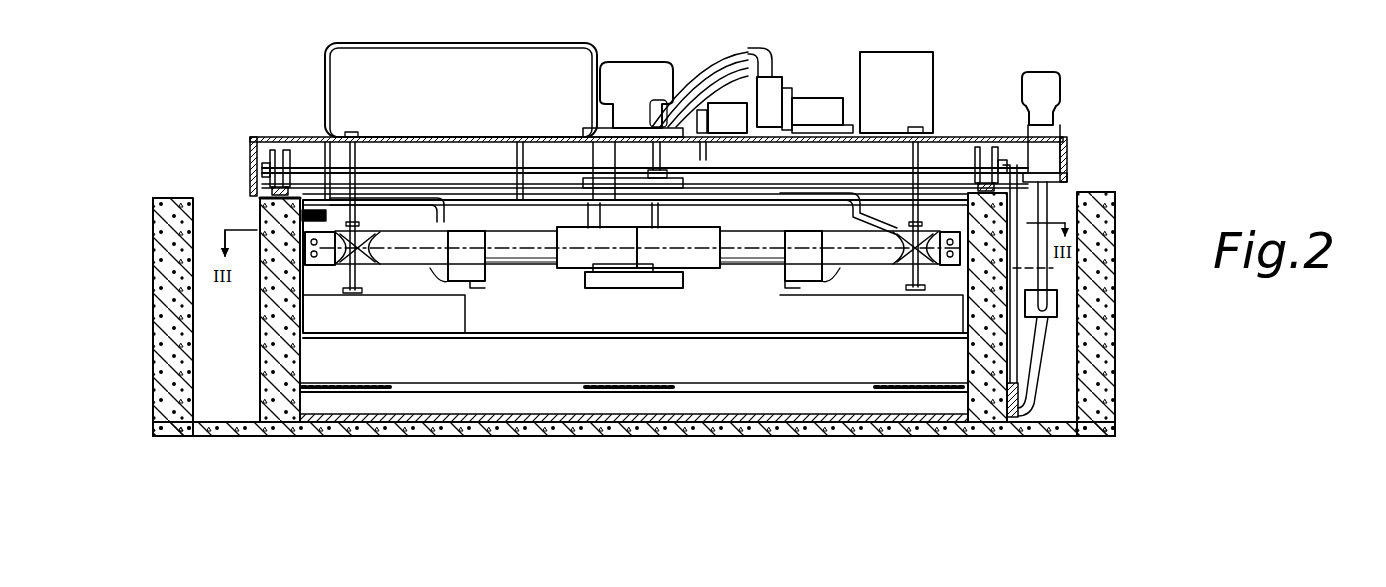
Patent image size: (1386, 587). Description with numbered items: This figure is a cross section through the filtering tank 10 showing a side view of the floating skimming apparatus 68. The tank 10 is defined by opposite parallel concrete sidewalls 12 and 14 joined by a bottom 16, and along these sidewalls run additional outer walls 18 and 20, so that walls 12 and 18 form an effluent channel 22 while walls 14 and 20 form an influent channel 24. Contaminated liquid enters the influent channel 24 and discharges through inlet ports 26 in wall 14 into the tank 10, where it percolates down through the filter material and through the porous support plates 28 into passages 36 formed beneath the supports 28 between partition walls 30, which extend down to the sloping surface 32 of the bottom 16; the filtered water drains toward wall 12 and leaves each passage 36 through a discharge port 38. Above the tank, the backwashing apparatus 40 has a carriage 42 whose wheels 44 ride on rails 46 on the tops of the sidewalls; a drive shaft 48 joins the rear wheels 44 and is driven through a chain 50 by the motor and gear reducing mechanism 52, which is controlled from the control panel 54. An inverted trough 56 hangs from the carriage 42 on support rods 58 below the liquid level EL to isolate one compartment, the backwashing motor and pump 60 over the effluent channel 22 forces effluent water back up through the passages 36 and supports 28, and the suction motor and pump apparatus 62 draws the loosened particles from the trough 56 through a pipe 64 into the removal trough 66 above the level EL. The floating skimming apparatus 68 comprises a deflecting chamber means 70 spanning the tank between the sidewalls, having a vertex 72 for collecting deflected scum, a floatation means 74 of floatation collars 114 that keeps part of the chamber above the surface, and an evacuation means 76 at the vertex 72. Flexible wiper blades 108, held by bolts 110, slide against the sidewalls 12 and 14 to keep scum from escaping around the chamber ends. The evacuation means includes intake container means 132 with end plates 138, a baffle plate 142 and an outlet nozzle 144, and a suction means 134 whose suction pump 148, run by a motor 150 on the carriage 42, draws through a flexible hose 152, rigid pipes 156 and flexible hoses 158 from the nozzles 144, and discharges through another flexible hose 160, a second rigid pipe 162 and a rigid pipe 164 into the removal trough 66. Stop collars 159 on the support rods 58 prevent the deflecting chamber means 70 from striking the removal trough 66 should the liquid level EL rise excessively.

The filtering tank 10 is at (153, 235).
The sidewall 12 is at (1035, 320).
The sidewall 14 is at (300, 198).
The bottom 16 is at (450, 420).
The outer wall 18 is at (1115, 333).
The outer wall 20 is at (165, 378).
The effluent channel 22 is at (1060, 390).
The influent channel 24 is at (200, 340).
The inlet ports 26 is at (262, 325).
The porous support plates 28 is at (582, 393).
The partition walls 30 is at (828, 368).
The sloping surface 32 is at (355, 430).
The passages 36 is at (762, 407).
The discharge port 38 is at (975, 405).
The backwashing apparatus 40 is at (1067, 140).
The carriage 42 is at (250, 138).
The wheels 44 is at (278, 150).
The rails 46 is at (268, 190).
The drive shaft 48 is at (478, 165).
The chain 50 is at (708, 160).
The driving motor and gear reducing mechanism 52 is at (735, 105).
The control panel 54 is at (935, 55).
The inverted trough 56 is at (487, 323).
The support rods 58 is at (355, 160).
The backwashing motor and pump 60 is at (1062, 88).
The suction motor and pump apparatus 62 is at (637, 72).
The pipe 64 is at (325, 67).
The removal trough 66 is at (262, 213).
The floating skimming apparatus 68 is at (543, 265).
The deflecting chamber means 70 is at (765, 270).
The vertex 72 is at (430, 268).
The floatation means 74 is at (665, 232).
The evacuation means 76 is at (795, 95).
The flexible wiper blades 108 is at (305, 245).
The bolts 110 is at (313, 262).
The floatation collars 114 is at (595, 265).
The intake container means 132 is at (500, 232).
The suction means 134 is at (780, 75).
The end plates 138 is at (477, 280).
The baffle plate 142 is at (462, 240).
The outlet nozzle 144 is at (438, 290).
The suction pump 148 is at (790, 90).
The motor 150 is at (825, 112).
The flexible hose 152 is at (720, 83).
The rigid pipes 156 is at (760, 175).
The flexible hoses 158 is at (423, 217).
The stop collars 159 is at (360, 225).
The flexible hose 160 is at (765, 55).
The second rigid pipe 162 is at (653, 155).
The rigid pipe 164 is at (520, 200).
The liquid level EL is at (1113, 272).